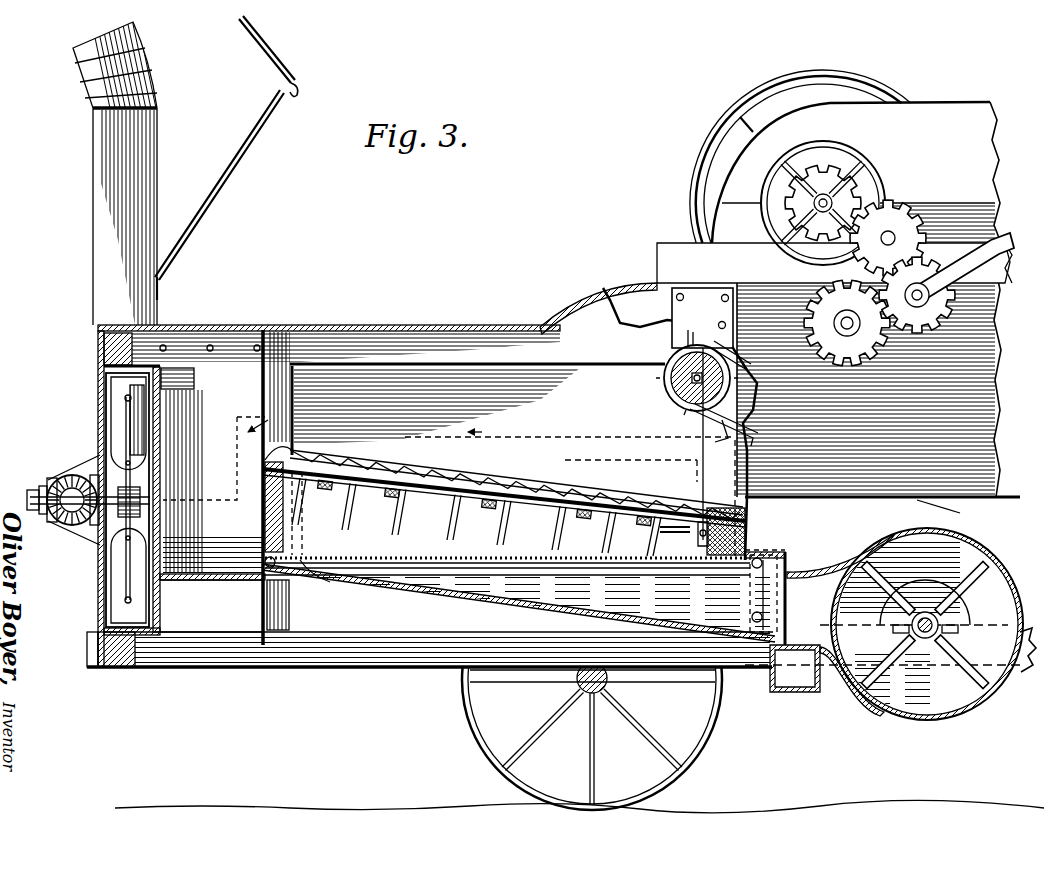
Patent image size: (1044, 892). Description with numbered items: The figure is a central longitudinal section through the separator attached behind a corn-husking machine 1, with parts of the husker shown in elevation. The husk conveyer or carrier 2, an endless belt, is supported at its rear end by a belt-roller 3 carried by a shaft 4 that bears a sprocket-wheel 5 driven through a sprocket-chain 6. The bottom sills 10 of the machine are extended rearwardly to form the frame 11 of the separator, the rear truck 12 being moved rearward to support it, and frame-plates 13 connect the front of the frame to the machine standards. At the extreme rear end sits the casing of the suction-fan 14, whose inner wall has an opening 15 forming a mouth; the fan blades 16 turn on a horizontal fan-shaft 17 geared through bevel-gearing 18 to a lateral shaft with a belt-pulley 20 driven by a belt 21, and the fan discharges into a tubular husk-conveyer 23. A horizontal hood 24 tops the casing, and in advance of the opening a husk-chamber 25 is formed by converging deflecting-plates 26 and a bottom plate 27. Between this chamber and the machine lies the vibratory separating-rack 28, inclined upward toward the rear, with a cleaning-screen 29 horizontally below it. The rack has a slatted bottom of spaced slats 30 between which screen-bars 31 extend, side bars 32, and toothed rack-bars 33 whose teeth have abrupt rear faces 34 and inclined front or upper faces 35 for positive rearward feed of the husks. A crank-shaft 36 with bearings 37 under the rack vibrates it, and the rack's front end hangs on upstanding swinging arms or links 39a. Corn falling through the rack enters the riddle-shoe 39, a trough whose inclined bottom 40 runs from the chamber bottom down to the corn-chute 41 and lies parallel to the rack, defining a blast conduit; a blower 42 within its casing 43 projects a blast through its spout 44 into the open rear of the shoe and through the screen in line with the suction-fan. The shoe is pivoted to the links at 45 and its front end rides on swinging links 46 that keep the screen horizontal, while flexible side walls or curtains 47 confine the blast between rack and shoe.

The corn-husking machine 1 is at (990, 336).
The husk conveyer or carrier 2 is at (703, 412).
The belt-roller 3 is at (668, 358).
The shaft 4 is at (237, 500).
The sprocket-wheel 5 is at (525, 452).
The sprocket-chain 6 is at (256, 330).
The bottom sills 10 is at (1025, 668).
The frame 11 is at (193, 655).
The rear truck 12 is at (566, 682).
The frame-plates 13 is at (671, 306).
The suction-fan 14 is at (107, 395).
The opening 15 is at (165, 452).
The fan blades 16 is at (117, 418).
The fan-shaft 17 is at (78, 518).
The bevel-gearing 18 is at (55, 520).
The belt-pulley 20 is at (78, 482).
The belt 21 is at (27, 477).
The tubular husk-conveyer 23 is at (105, 185).
The hood 24 is at (196, 382).
The husk-chamber 25 is at (215, 481).
The deflecting-plates 26 is at (246, 576).
The bottom plate 27 is at (198, 578).
The vibratory separating-rack 28 is at (520, 498).
The cleaning-screen 29 is at (450, 558).
The slats 30 is at (405, 487).
The screen-bars 31 is at (350, 492).
The side bars 32 is at (600, 472).
The toothed rack-bars 33 is at (470, 470).
The rear faces 34 is at (435, 460).
The front or upper faces 35 is at (458, 448).
The crank-shaft 36 is at (697, 538).
The bearings 37 is at (745, 532).
The riddle-shoe 39 is at (615, 577).
The swinging arms or links 39a is at (790, 565).
The inclined bottom 40 is at (520, 603).
The corn-chute 41 is at (772, 684).
The blower 42 is at (924, 635).
The casing 43 is at (940, 714).
The spout 44 is at (841, 625).
The pivot 45 is at (320, 561).
The swinging links 46 is at (750, 610).
The flexible side walls or curtains 47 is at (272, 500).